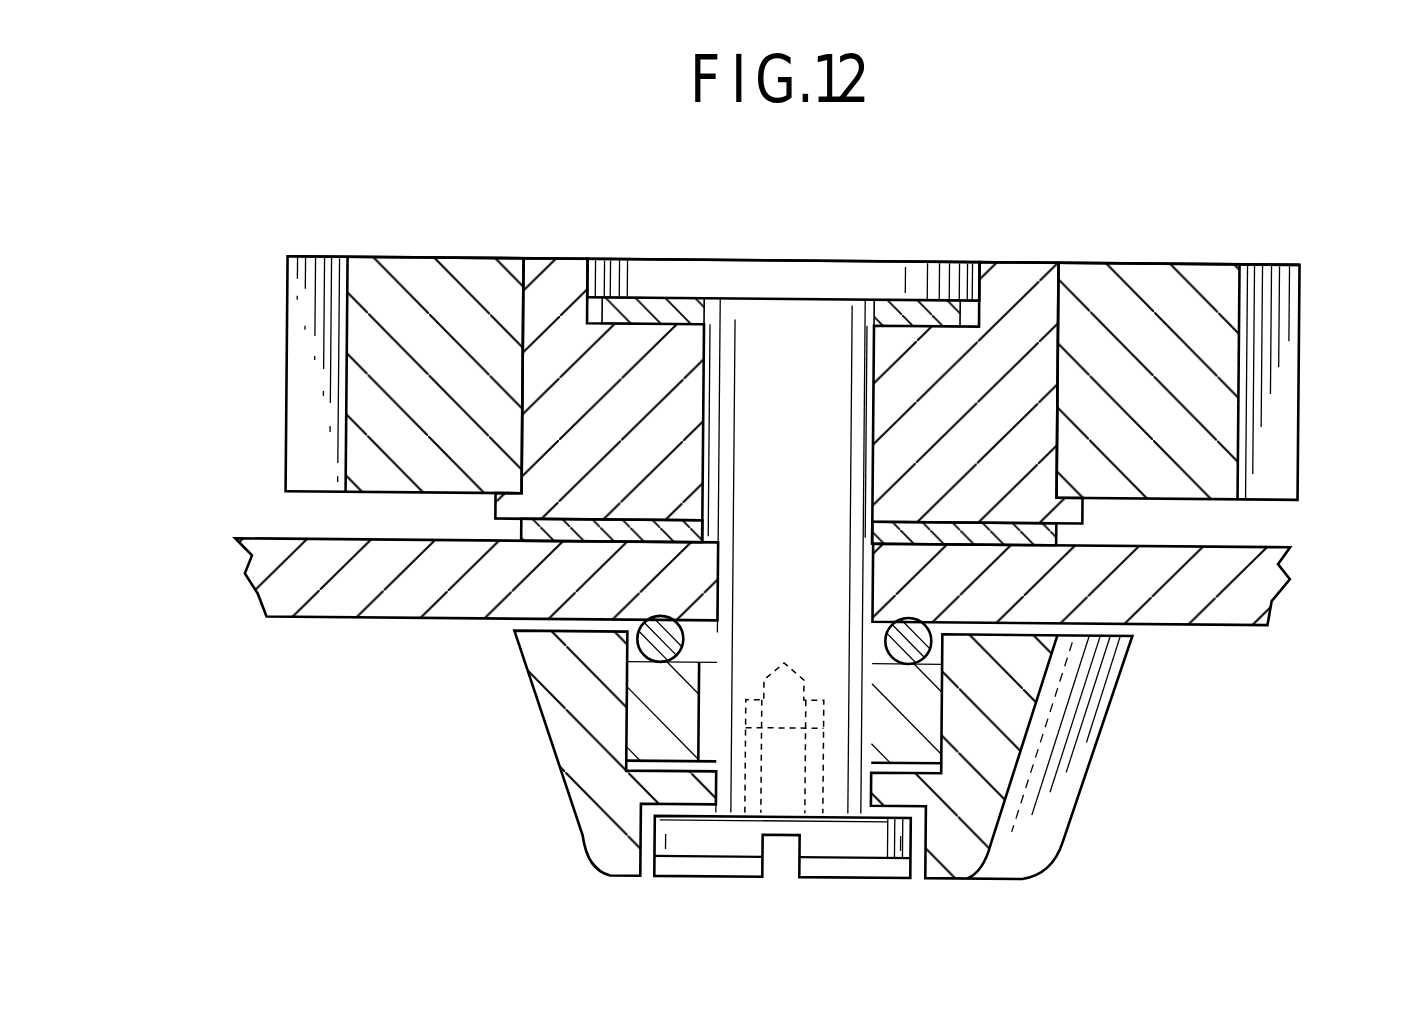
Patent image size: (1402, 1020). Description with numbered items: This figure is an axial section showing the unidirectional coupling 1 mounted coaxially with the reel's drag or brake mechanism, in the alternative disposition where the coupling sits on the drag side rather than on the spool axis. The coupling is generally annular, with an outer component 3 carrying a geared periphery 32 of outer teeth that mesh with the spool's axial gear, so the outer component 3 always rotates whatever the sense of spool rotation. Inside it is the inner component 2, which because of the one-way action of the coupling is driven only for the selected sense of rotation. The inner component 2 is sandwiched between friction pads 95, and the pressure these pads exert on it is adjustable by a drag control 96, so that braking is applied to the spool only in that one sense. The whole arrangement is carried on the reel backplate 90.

The unidirectional coupling 1 is at (907, 232).
The inner component 2 is at (1022, 346).
The outer component 3 is at (389, 272).
The geared periphery 32 is at (1283, 282).
The backplate 90 is at (282, 575).
The friction pads 95 is at (648, 313).
The drag control 96 is at (1088, 843).